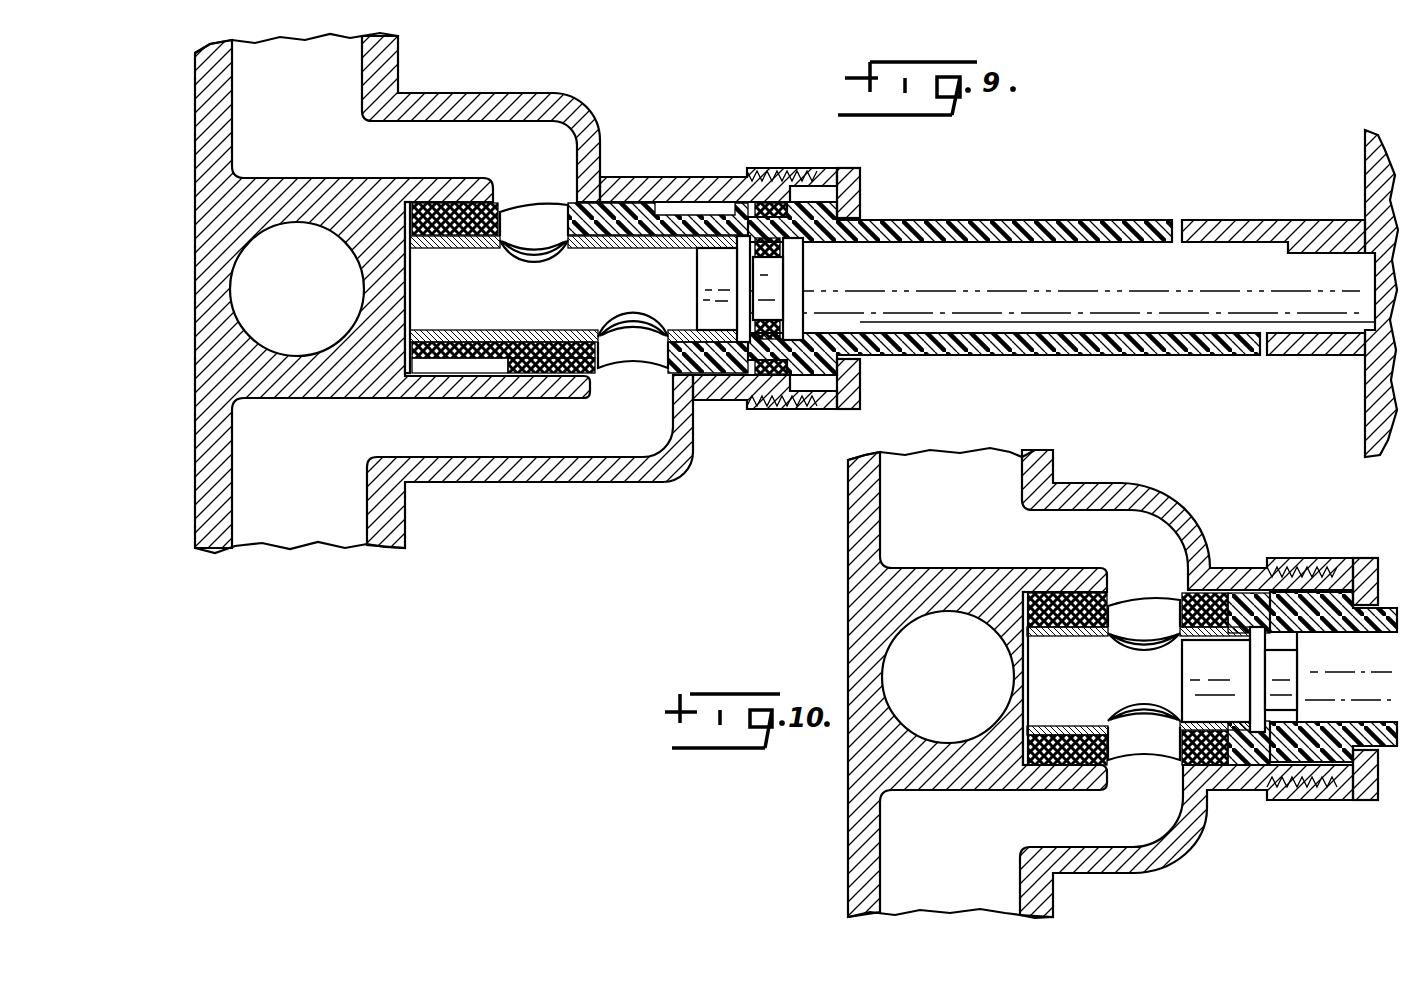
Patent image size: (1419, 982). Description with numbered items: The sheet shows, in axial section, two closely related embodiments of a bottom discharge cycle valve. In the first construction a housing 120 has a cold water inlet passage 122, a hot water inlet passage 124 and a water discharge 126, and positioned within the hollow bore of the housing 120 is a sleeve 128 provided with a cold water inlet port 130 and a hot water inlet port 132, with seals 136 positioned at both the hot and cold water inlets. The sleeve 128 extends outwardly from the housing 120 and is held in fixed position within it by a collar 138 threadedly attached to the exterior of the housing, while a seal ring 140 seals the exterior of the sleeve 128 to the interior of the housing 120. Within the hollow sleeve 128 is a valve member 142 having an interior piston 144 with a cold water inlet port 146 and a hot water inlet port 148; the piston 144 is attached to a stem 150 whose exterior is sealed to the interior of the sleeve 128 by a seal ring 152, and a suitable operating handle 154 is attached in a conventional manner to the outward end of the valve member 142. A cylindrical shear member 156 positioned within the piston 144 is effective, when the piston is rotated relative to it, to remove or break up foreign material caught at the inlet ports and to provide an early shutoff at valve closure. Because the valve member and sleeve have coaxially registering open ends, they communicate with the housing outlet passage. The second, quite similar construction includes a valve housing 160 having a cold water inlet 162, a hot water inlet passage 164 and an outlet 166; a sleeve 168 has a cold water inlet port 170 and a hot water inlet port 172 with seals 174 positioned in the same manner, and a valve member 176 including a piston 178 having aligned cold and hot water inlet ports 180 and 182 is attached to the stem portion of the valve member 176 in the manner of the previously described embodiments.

In FIG. 9, the housing 120 is at (518, 100).
In FIG. 9, the cold water inlet passage 122 is at (255, 82).
In FIG. 9, the hot water inlet passage 124 is at (310, 523).
In FIG. 9, the water discharge 126 is at (297, 356).
In FIG. 9, the sleeve 128 is at (695, 227).
In FIG. 9, the cold water inlet port 130 is at (534, 220).
In FIG. 9, the hot water inlet port 132 is at (622, 360).
In FIG. 9, the seals 136 is at (460, 205).
In FIG. 9, the collar 138 is at (838, 168).
In FIG. 9, the seal ring 140 is at (765, 410).
In FIG. 9, the valve member 142 is at (1004, 242).
In FIG. 9, the piston 144 is at (518, 338).
In FIG. 9, the cold water inlet port 146 is at (538, 253).
In FIG. 9, the hot water inlet port 148 is at (657, 333).
In FIG. 9, the stem 150 is at (778, 305).
In FIG. 9, the seal ring 152 is at (773, 253).
In FIG. 9, the operating handle 154 is at (1298, 220).
In FIG. 9, the cylindrical shear member 156 is at (418, 322).
In FIG. 10, the valve housing 160 is at (1117, 488).
In FIG. 10, the cold water inlet 162 is at (975, 440).
In FIG. 10, the hot water inlet passage 164 is at (960, 898).
In FIG. 10, the outlet 166 is at (948, 743).
In FIG. 10, the sleeve 168 is at (1335, 602).
In FIG. 10, the cold water inlet port 170 is at (1157, 613).
In FIG. 10, the hot water inlet port 172 is at (1140, 748).
In FIG. 10, the seals 174 is at (1040, 672).
In FIG. 10, the valve member 176 is at (1338, 688).
In FIG. 10, the piston 178 is at (1033, 690).
In FIG. 10, the cold water inlet port 180 is at (1158, 642).
In FIG. 10, the hot water inlet port 182 is at (1173, 718).